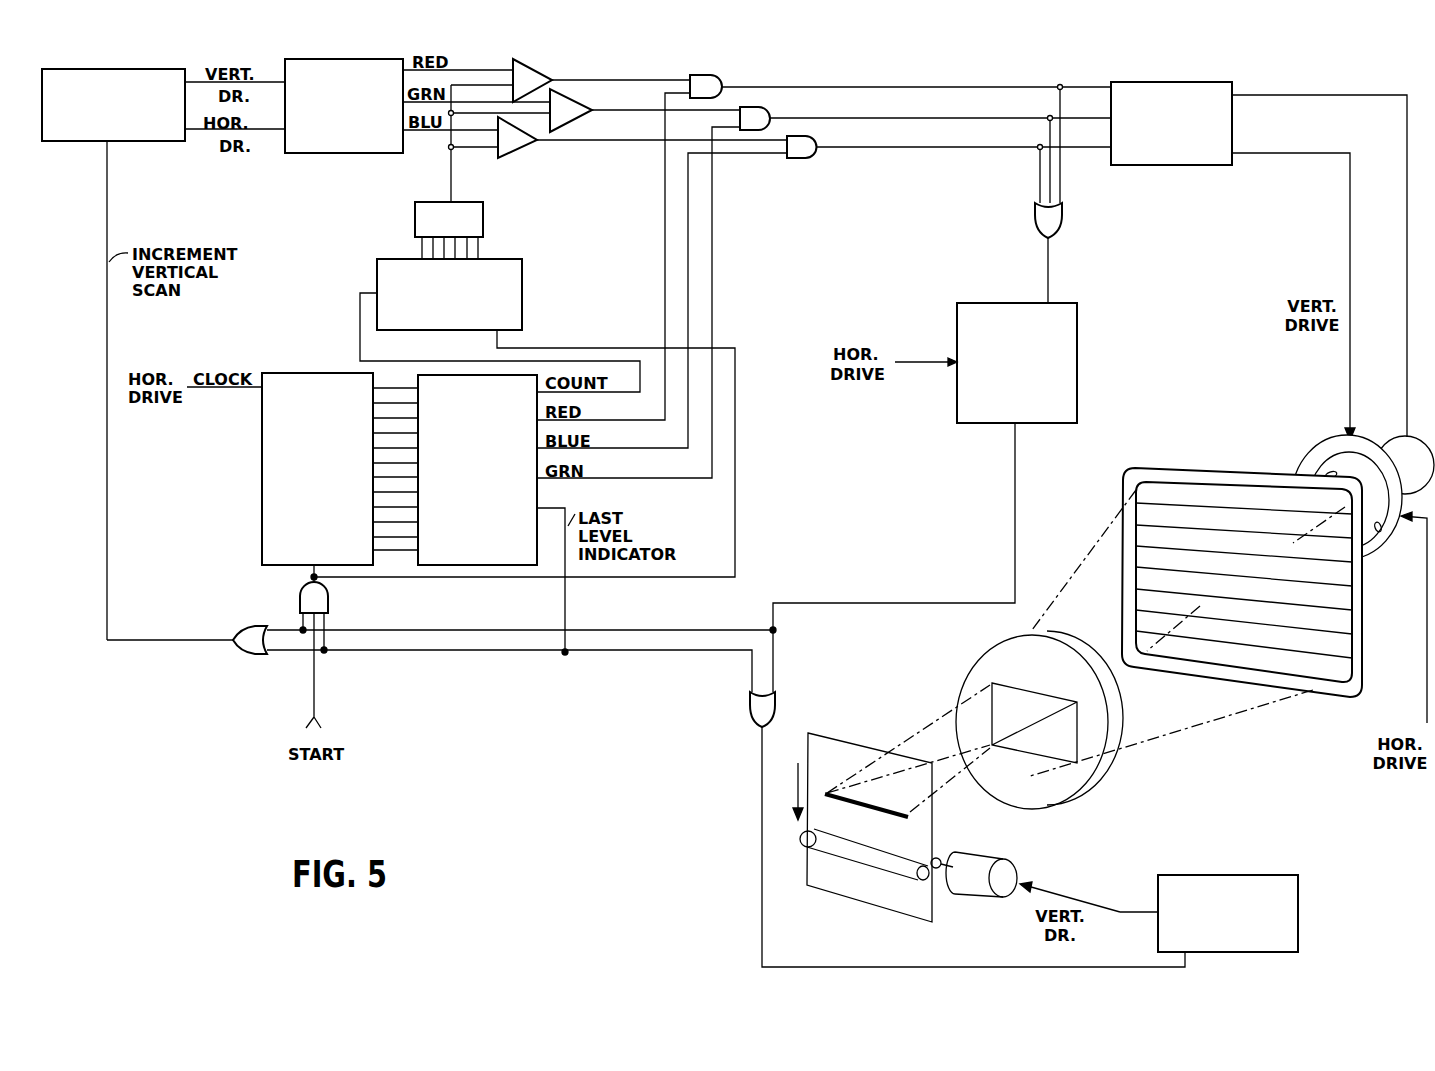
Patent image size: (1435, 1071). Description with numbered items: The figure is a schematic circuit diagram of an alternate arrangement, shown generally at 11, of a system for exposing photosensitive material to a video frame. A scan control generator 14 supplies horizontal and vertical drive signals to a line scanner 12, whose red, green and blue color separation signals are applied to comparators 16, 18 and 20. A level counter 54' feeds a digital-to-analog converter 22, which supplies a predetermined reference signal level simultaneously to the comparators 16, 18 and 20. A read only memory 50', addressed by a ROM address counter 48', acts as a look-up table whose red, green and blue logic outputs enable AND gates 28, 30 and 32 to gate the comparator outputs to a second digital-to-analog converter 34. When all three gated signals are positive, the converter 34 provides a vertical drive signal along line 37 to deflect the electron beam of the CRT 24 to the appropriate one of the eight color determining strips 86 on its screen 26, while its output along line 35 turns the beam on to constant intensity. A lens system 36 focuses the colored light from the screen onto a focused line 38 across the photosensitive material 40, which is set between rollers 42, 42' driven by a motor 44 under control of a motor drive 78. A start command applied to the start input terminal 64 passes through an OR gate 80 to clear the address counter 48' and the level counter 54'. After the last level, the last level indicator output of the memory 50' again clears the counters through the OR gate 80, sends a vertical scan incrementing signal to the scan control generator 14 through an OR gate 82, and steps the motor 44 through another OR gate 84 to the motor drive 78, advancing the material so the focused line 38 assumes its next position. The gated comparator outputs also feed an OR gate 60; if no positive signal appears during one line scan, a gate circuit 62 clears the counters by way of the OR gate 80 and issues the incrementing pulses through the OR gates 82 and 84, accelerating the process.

The system 11 is at (1303, 80).
The line scanner 12 is at (333, 156).
The scan control generator 14 is at (146, 146).
The comparator 16 is at (543, 70).
The comparator 18 is at (580, 100).
The comparator 20 is at (525, 148).
The digital-to-analog converter 22 is at (485, 222).
The CRT 24 is at (1328, 472).
The screen 26 is at (1125, 487).
The AND gate 28 is at (720, 79).
The AND gate 30 is at (768, 110).
The AND gate 32 is at (815, 138).
The digital-to-analog converter 34 is at (1180, 168).
The line 35 is at (1273, 97).
The lens system 36 is at (968, 672).
The line 37 is at (1270, 158).
The focused line 38 is at (836, 806).
The photosensitive material 40 is at (932, 830).
The roller 42 is at (876, 885).
The roller 42' is at (791, 802).
The motor 44 is at (986, 858).
The ROM address counter 48' is at (282, 469).
The read only memory 50' is at (455, 463).
The level counter 54' is at (524, 418).
The OR gate 60 is at (1064, 221).
The gate circuit 62 is at (1079, 350).
The start input terminal 64 is at (306, 716).
The motor drive 78 is at (1244, 875).
The OR gate 80 is at (330, 604).
The OR gate 82 is at (253, 625).
The OR gate 84 is at (750, 709).
The color determining strips 86 is at (1358, 606).